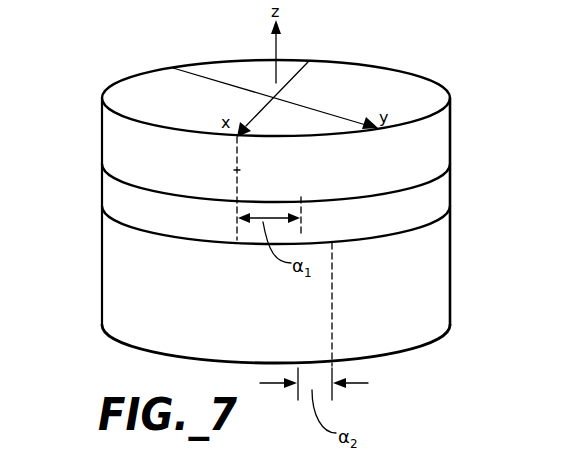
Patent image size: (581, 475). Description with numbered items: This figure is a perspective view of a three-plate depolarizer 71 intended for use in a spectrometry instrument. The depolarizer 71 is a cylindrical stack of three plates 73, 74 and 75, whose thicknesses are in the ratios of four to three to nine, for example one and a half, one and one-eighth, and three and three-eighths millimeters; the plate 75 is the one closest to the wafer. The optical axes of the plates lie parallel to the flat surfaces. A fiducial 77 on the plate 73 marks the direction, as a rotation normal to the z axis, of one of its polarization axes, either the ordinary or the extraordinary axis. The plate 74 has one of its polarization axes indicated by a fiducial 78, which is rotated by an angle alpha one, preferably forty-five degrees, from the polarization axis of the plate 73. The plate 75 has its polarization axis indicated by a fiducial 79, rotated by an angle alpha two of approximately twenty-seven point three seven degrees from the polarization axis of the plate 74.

The depolarizer 71 is at (92, 95).
The plate 73 is at (451, 129).
The plate 74 is at (451, 192).
The plate 75 is at (451, 262).
The fiducial 77 is at (235, 170).
The fiducial 78 is at (303, 230).
The fiducial 79 is at (334, 323).